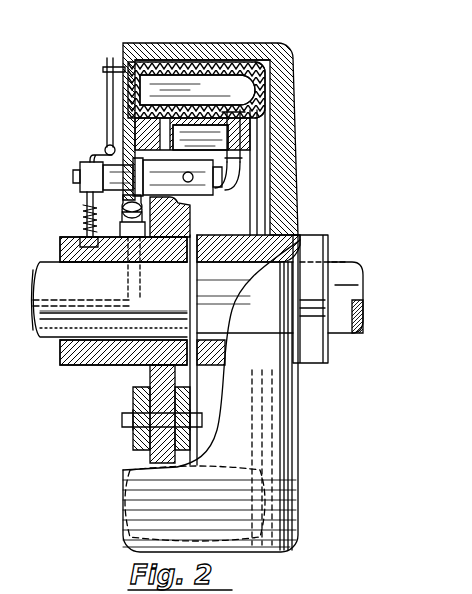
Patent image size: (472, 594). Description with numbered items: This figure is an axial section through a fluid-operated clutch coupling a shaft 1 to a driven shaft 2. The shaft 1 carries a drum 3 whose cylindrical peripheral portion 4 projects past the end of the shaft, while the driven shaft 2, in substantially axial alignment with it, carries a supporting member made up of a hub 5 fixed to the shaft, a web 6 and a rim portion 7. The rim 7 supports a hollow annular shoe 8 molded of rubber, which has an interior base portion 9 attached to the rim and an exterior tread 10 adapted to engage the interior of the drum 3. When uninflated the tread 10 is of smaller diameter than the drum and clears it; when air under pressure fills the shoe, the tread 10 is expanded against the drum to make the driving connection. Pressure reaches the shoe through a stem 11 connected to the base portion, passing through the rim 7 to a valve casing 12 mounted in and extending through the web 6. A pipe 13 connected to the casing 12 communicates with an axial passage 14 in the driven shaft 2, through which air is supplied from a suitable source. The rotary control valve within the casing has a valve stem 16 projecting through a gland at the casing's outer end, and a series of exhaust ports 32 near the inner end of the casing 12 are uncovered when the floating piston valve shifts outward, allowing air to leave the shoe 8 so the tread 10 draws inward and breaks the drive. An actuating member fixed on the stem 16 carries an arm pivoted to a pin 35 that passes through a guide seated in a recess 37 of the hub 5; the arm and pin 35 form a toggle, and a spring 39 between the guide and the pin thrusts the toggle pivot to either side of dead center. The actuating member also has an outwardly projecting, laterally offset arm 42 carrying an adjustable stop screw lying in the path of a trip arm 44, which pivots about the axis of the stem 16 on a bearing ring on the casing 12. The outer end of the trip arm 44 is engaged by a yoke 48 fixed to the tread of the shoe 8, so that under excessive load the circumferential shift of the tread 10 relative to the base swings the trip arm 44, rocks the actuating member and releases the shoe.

The shaft 1 is at (347, 264).
The driven shaft 2 is at (45, 345).
The drum 3 is at (298, 157).
The cylindrical peripheral portion 4 is at (238, 43).
The hub 5 is at (73, 366).
The web 6 is at (140, 145).
The rim portion 7 is at (192, 134).
The hollow annular shoe 8 is at (262, 87).
The interior base portion 9 is at (183, 111).
The exterior tread 10 is at (195, 68).
The stem 11 is at (250, 134).
The valve casing 12 is at (170, 205).
The pipe 13 is at (138, 287).
The axial passage 14 is at (45, 312).
The valve stem 16 is at (75, 180).
The exhaust ports 32 is at (193, 182).
The pin 35 is at (71, 226).
The recess 37 is at (62, 251).
The spring 39 is at (68, 214).
The laterally offset arm 42 is at (95, 158).
The trip arm 44 is at (107, 93).
The yoke 48 is at (103, 69).